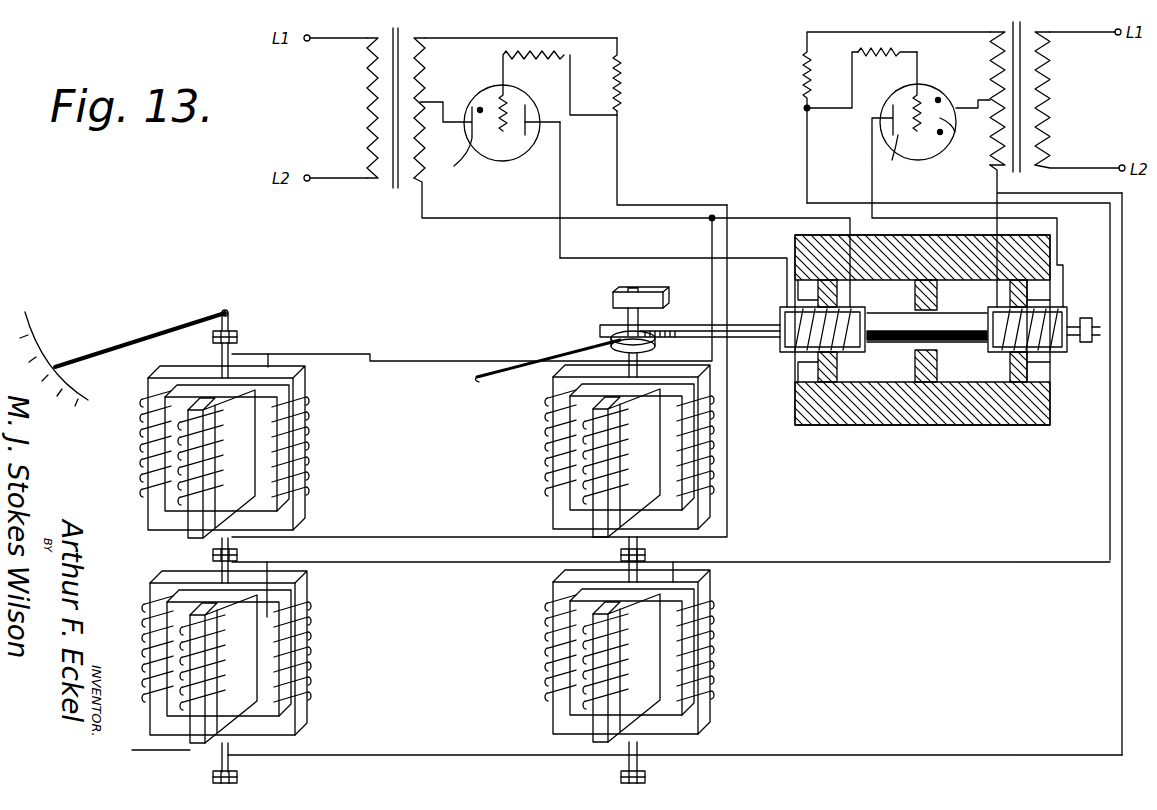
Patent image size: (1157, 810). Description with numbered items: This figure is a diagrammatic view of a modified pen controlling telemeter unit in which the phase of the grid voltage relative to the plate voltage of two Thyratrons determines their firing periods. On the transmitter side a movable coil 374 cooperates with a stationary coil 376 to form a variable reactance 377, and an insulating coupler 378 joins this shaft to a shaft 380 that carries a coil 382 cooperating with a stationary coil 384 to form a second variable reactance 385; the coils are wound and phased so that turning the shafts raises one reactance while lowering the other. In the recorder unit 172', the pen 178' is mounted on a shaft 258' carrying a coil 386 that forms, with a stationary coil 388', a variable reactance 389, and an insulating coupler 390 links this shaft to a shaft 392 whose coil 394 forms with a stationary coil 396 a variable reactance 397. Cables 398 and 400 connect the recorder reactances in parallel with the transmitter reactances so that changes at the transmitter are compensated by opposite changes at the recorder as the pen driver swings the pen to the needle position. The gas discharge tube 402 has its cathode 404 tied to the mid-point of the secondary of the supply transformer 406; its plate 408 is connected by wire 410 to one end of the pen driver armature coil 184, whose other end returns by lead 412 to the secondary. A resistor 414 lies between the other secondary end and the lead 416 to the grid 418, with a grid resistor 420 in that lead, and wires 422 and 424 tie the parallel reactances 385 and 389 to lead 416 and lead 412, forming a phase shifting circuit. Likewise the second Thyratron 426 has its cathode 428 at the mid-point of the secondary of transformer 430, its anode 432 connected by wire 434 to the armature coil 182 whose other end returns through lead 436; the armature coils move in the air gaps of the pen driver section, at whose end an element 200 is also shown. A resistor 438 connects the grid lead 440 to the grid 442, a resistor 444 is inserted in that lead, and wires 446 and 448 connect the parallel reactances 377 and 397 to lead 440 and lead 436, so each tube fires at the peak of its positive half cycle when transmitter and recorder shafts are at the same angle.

The recorder unit 172' is at (793, 543).
The pen 178' is at (547, 349).
The armature coil 182 is at (1035, 355).
The armature coil 184 is at (790, 355).
The adjusting knob 200 is at (1082, 318).
The shaft 258' is at (667, 332).
The movable coil 374 is at (190, 746).
The stationary coil 376 is at (306, 664).
The variable inductance or reactance 377 is at (320, 718).
The insulating coupler 378 is at (214, 561).
The shaft 380 is at (216, 350).
The coil 382 is at (188, 532).
The stationary coil 384 is at (150, 402).
The variable inductance or reactance 385 is at (313, 452).
The coil 386 is at (598, 441).
The stationary coil 388' is at (605, 447).
The variable inductance or reactance 389 is at (550, 416).
The insulating coupler 390 is at (620, 560).
The shaft 392 is at (650, 750).
The coil 394 is at (585, 739).
The stationary coil 396 is at (560, 594).
The variable inductance or reactance 397 is at (550, 690).
The cable 398 is at (424, 360).
The cable 400 is at (421, 564).
The gas discharge tube or Thyratron 402 is at (524, 140).
The cathode 404 is at (447, 144).
The alternating current supply transformer 406 is at (400, 36).
The plate 408 is at (527, 106).
The wire 410 is at (560, 258).
The lead 412 is at (474, 225).
The resistor 414 is at (630, 50).
The lead 416 is at (590, 118).
The grid 418 is at (498, 102).
The grid resistor 420 is at (503, 55).
The wire 422 is at (622, 167).
The wire 424 is at (712, 238).
The gas discharge or Thyratron tube 426 is at (931, 162).
The cathode 428 is at (955, 132).
The supply transformer 430 is at (1018, 38).
The anode 432 is at (967, 206).
The wire 434 is at (1095, 236).
The lead 436 is at (1003, 183).
The resistor 438 is at (805, 82).
The lead 440 is at (845, 112).
The grid 442 is at (957, 80).
The resistor 444 is at (887, 67).
The wire 446 is at (1108, 265).
The wire 448 is at (1122, 626).